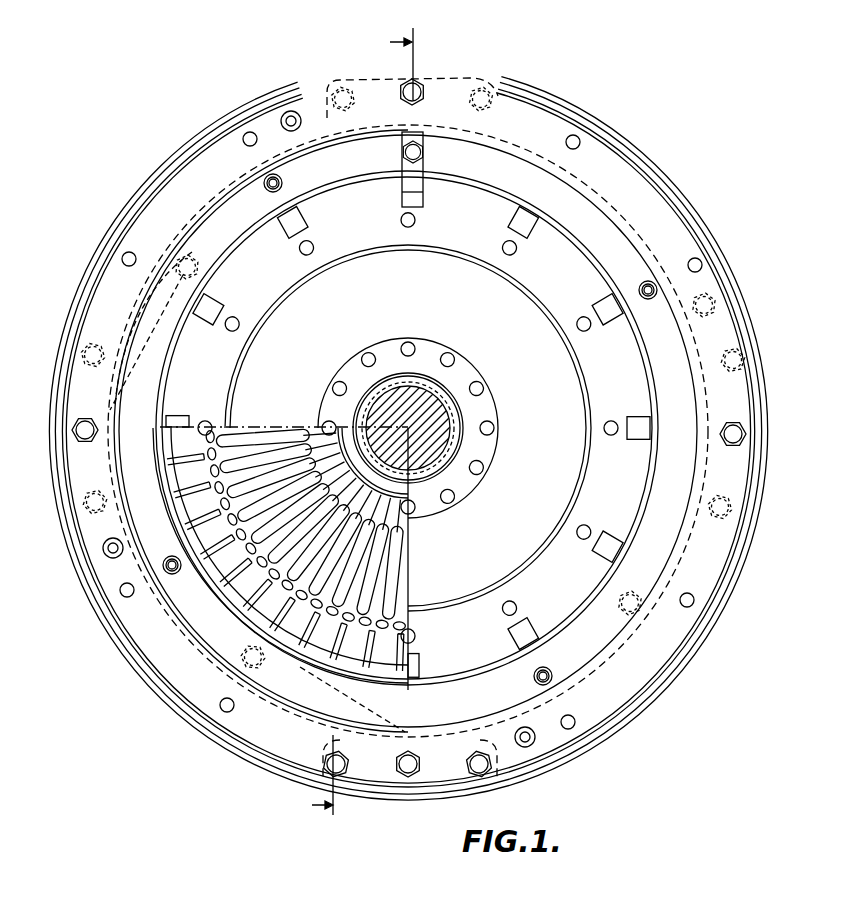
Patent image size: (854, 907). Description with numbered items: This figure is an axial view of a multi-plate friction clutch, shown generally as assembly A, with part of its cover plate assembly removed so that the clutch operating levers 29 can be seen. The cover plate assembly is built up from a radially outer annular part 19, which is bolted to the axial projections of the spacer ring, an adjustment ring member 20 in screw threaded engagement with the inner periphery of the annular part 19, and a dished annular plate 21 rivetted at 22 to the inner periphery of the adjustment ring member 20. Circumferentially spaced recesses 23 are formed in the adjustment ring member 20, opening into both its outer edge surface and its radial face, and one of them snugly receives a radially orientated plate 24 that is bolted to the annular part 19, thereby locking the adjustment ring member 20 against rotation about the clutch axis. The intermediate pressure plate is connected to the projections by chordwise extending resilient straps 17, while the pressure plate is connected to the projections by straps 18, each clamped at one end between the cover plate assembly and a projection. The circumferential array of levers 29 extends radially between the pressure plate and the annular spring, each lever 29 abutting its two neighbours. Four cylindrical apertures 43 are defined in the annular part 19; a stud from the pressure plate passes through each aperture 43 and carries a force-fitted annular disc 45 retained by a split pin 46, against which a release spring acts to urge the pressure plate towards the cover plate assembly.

The straps 17 is at (358, 100).
The straps 18 is at (452, 98).
The radially outer annular part 19 is at (540, 118).
The adjustment ring member 20 is at (570, 246).
The dished annular plate 21 is at (558, 392).
The rivets 22 is at (236, 320).
The recesses 23 is at (512, 233).
The radially orientated plate 24 is at (413, 164).
The levers 29 is at (278, 433).
The cylindrical apertures 43 is at (283, 178).
The annular disc 45 is at (266, 180).
The split pin 46 is at (270, 191).
The clutch assembly A is at (674, 160).